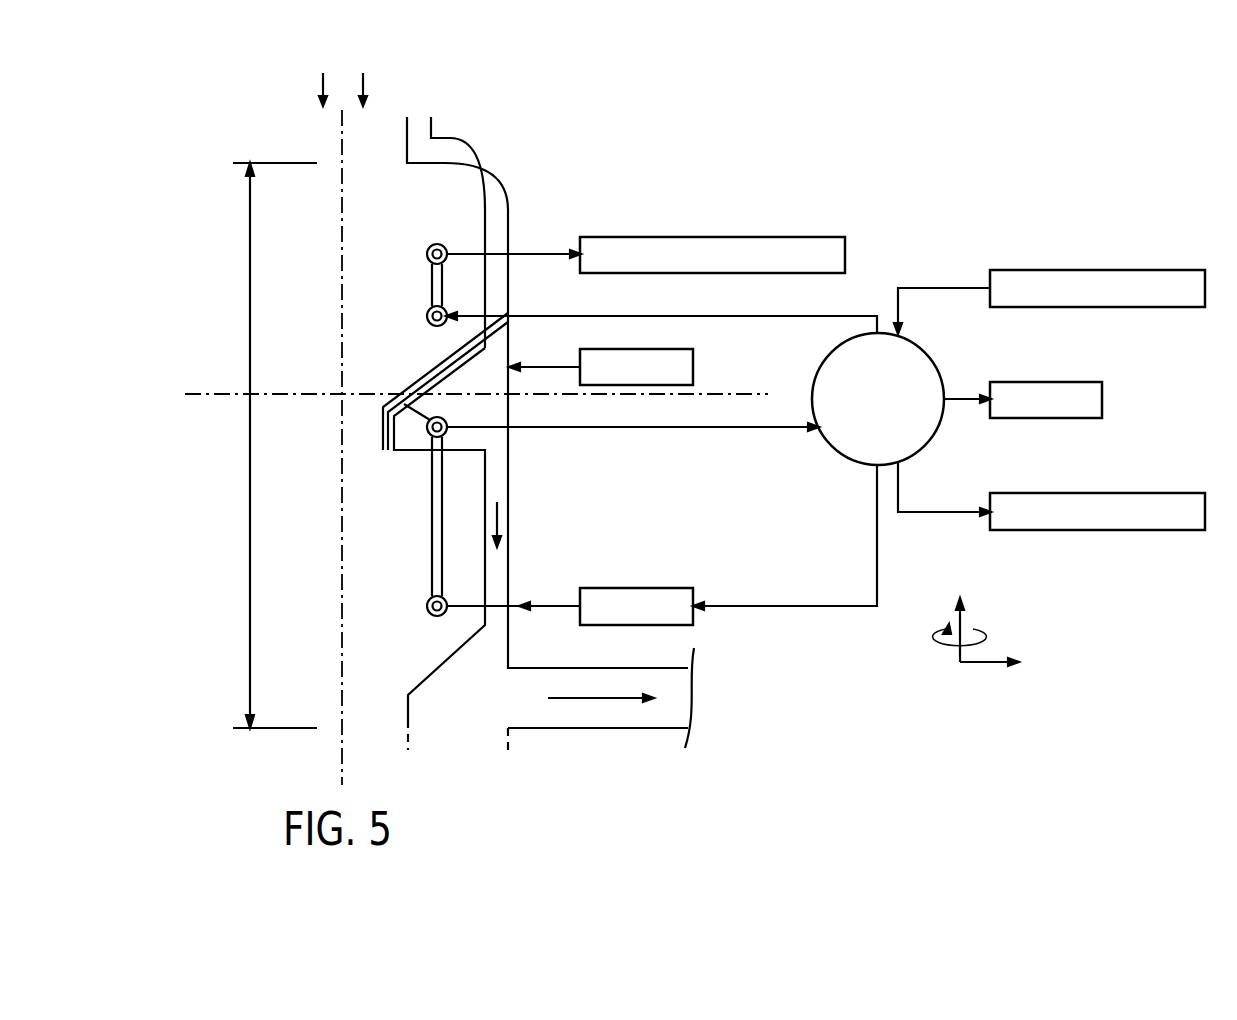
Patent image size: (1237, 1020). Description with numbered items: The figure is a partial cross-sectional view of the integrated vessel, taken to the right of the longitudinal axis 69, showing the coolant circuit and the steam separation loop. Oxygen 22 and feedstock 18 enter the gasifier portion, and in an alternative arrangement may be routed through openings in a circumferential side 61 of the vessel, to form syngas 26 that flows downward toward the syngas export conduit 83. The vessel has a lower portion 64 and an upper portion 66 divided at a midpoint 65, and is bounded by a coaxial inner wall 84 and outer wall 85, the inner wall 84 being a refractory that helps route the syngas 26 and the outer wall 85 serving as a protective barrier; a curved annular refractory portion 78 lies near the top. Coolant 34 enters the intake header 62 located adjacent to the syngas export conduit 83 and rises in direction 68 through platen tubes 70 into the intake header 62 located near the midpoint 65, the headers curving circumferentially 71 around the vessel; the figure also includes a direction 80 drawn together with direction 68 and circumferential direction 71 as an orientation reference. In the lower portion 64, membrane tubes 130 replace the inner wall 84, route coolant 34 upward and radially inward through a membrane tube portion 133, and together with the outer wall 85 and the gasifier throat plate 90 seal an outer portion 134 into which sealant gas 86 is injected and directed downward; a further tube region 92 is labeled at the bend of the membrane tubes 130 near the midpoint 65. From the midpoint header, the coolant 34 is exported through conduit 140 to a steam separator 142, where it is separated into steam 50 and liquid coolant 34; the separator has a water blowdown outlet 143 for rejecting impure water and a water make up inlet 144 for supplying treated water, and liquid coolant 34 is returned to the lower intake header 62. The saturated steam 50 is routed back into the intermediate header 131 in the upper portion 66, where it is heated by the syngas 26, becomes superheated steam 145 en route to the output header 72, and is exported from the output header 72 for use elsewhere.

The feedstock 18 is at (362, 77).
The oxygen 22 is at (322, 77).
The syngas 26 is at (565, 700).
The coolant 34 is at (628, 428).
The steam 50 is at (750, 315).
The circumferential side 61 is at (431, 128).
The intake header 62 is at (447, 434).
The lower portion 64 is at (250, 598).
The midpoint 65 is at (320, 385).
The upper portion 66 is at (250, 318).
The direction 68 is at (958, 616).
The longitudinal axis 69 is at (342, 205).
The platen tubes 70 is at (432, 272).
The circumferential direction 71 is at (950, 648).
The output header 72 is at (440, 243).
The curved annular refractory portion 78 is at (466, 180).
The horizontal axis 80 is at (1002, 665).
The syngas export conduit 83 is at (662, 715).
The inner wall 84 is at (452, 165).
The outer wall 85 is at (490, 163).
The sealant gas 86 is at (637, 349).
The gasifier throat plate 90 is at (392, 398).
The tube section 92 is at (412, 382).
The membrane tubes 130 is at (407, 404).
The intermediate header 131 is at (428, 307).
The membrane tube portion 133 is at (394, 452).
The outer portion 134 is at (472, 383).
The conduit 140 is at (765, 430).
The steam separator 142 is at (932, 357).
The water blowdown outlet 143 is at (1043, 530).
The water make up inlet 144 is at (1043, 270).
The superheated steam 145 is at (703, 237).